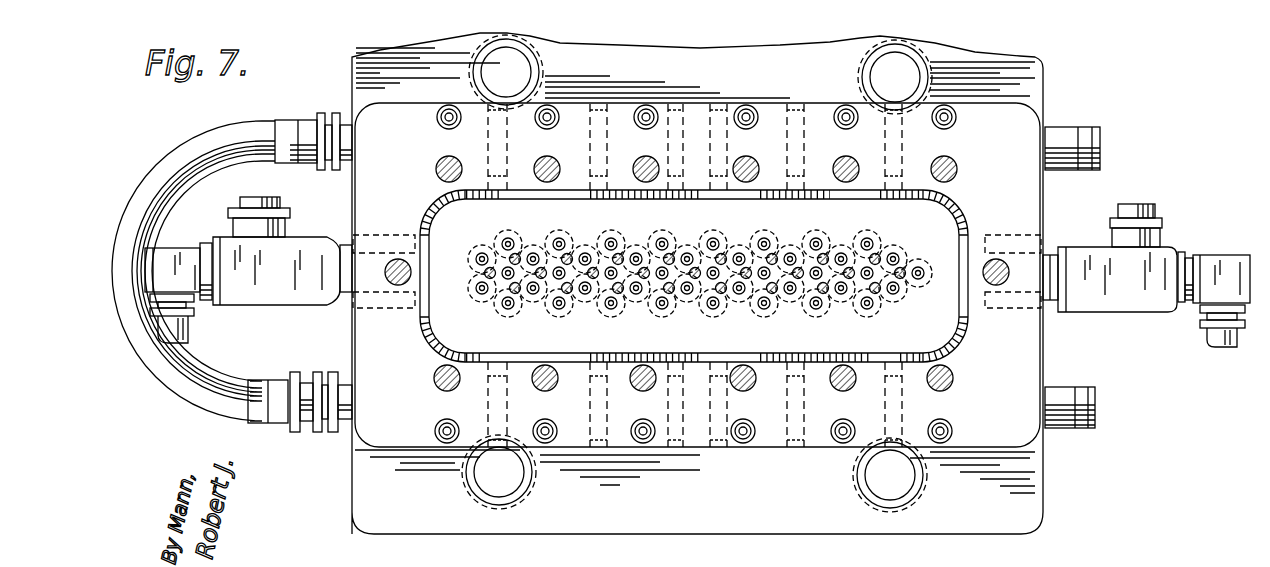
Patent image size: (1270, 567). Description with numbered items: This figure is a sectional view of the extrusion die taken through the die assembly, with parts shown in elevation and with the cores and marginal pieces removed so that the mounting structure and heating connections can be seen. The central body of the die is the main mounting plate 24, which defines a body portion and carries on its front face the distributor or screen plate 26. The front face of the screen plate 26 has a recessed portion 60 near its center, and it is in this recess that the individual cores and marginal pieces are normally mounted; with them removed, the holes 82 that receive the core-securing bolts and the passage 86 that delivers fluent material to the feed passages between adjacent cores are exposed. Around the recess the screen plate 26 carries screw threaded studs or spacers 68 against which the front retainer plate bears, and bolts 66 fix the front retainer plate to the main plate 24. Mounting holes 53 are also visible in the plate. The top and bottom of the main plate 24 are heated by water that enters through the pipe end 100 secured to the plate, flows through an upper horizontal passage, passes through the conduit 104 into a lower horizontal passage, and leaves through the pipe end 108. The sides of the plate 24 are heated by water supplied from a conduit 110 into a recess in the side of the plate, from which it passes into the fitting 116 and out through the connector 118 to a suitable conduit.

The main mounting plate 24 is at (1023, 514).
The screen plate 26 is at (1043, 362).
The mounting hole 53 is at (541, 70).
The recessed portion 60 is at (950, 218).
The bolts 66 is at (440, 180).
The screw threaded studs 68 is at (441, 128).
The holes 82 is at (488, 276).
The passage 86 is at (505, 238).
The pipe end 100 is at (1100, 132).
The conduit 104 is at (178, 162).
The pipe end 108 is at (1096, 418).
The conduit 110 is at (185, 330).
The fitting 116 is at (298, 305).
The connector 118 is at (272, 205).